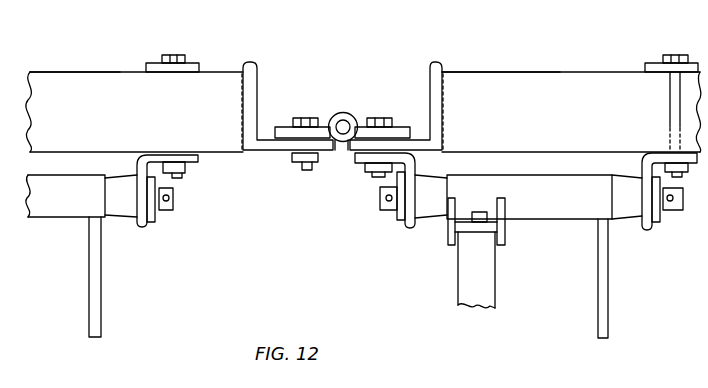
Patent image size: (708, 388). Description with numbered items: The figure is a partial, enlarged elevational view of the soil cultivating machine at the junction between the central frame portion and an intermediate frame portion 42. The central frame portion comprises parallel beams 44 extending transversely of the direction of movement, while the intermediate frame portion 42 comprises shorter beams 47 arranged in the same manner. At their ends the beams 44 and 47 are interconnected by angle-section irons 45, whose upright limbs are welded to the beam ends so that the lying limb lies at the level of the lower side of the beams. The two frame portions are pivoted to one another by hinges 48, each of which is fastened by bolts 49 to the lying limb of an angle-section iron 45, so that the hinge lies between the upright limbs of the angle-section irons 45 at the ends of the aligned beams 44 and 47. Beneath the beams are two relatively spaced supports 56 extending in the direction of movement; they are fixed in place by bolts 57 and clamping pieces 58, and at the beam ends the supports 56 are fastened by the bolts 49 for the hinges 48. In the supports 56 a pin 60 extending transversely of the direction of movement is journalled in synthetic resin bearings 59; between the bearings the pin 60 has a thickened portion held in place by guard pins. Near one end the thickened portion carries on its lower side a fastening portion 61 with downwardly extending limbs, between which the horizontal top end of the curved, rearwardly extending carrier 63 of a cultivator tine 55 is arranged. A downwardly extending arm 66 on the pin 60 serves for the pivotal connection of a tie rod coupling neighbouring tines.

The intermediate frame portion 42 is at (118, 66).
The beam 44 is at (543, 56).
The angle-section iron 45 is at (254, 80).
The beam 47 is at (73, 72).
The hinge 48 is at (344, 112).
The bolt 49 is at (305, 118).
The cultivator tine 55 is at (480, 310).
The support 56 is at (180, 157).
The bolt 57 is at (175, 55).
The clamping piece 58 is at (200, 63).
The synthetic resin bearing 59 is at (128, 210).
The pin 60 is at (50, 217).
The fastening portion 61 is at (450, 233).
The carrier 63 is at (462, 285).
The arm 66 is at (103, 303).